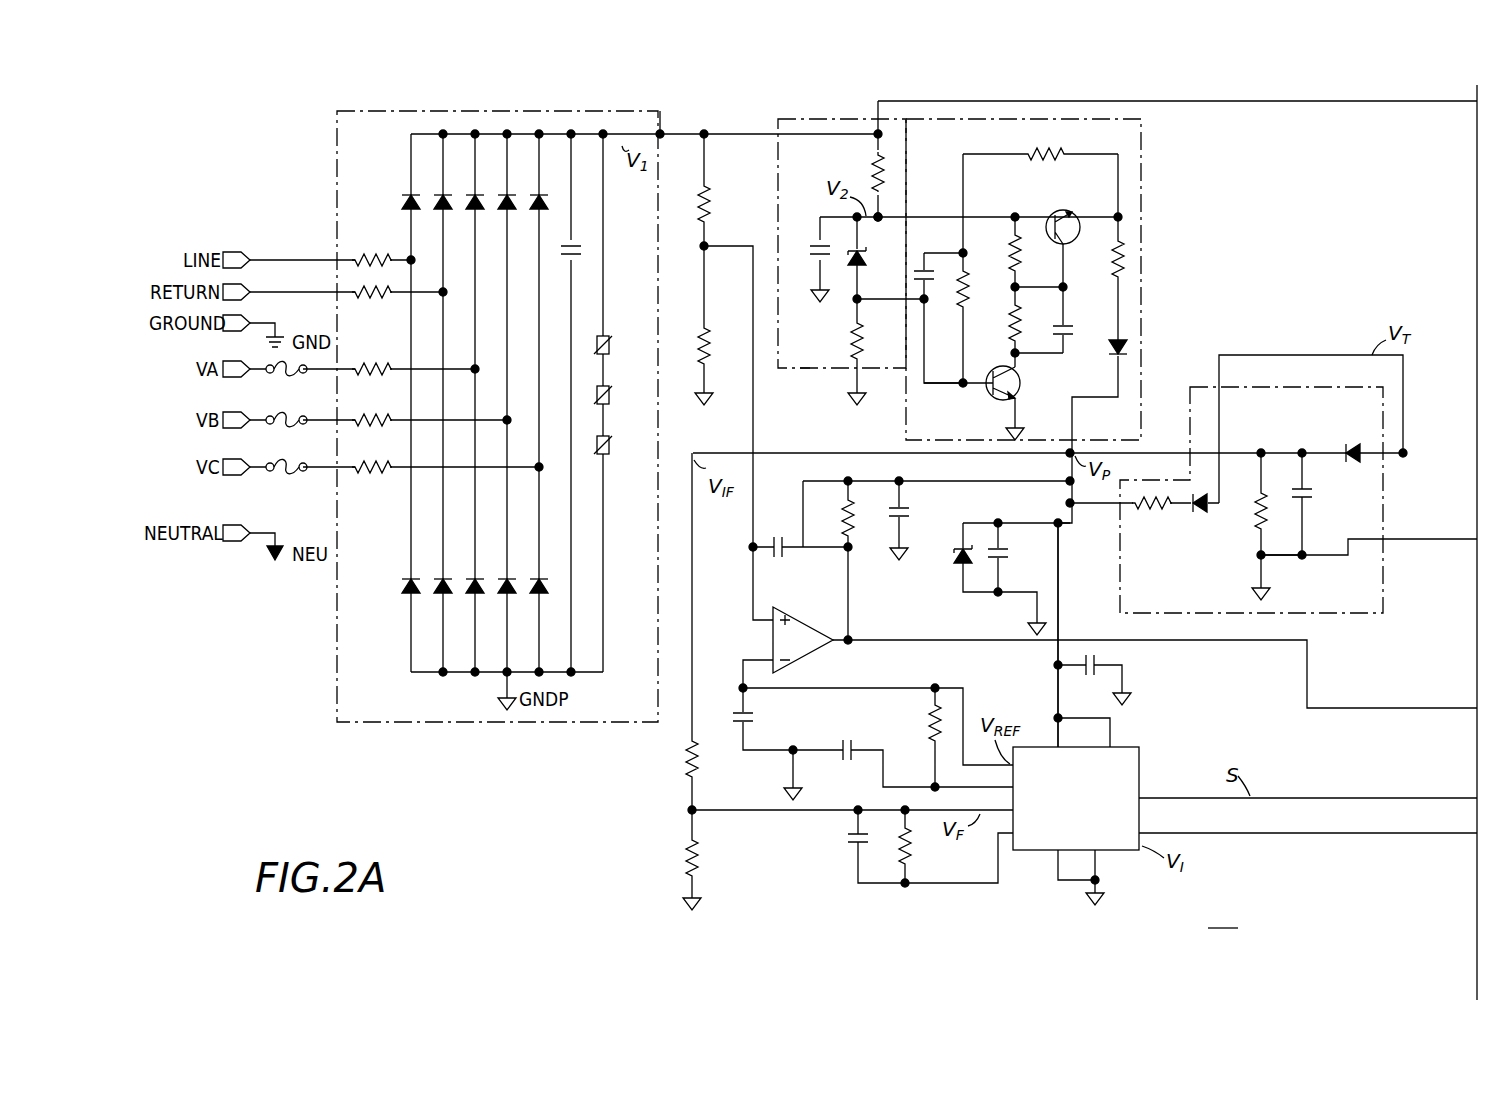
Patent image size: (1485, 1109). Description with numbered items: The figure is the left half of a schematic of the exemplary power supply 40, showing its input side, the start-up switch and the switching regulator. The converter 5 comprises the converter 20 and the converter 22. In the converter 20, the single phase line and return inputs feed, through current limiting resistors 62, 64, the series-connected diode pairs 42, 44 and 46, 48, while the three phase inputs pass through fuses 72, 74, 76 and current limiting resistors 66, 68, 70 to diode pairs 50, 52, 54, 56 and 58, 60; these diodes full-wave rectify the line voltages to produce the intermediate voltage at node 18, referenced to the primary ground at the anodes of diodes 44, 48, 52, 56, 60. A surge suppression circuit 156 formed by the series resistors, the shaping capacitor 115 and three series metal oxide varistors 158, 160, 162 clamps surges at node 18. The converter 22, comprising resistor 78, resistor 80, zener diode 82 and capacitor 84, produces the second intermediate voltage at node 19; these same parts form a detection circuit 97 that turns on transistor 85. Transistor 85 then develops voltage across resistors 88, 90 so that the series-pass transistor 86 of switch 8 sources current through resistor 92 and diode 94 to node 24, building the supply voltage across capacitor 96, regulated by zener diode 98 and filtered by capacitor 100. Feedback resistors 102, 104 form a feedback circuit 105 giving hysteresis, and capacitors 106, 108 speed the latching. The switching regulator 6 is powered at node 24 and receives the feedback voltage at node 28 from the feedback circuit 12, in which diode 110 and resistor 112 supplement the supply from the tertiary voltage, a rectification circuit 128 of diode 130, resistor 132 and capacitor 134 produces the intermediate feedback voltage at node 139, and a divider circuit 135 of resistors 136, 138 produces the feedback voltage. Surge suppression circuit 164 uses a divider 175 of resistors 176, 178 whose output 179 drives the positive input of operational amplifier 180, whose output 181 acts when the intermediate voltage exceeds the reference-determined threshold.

The converter 5 is at (754, 104).
The switching regulator 6 is at (1140, 760).
The switch 8 is at (1142, 148).
The feedback circuit 12 is at (1380, 613).
The node 18 is at (664, 138).
The node 19 is at (878, 222).
The converter 20 is at (406, 722).
The converter 22 is at (793, 120).
The node 24 is at (1064, 484).
The node 28 is at (690, 808).
The power supply 40 is at (1223, 916).
The diode 42 is at (405, 198).
The diode 44 is at (405, 582).
The diode 46 is at (440, 210).
The diode 48 is at (440, 596).
The diode 50 is at (469, 198).
The diode 52 is at (469, 582).
The diode 54 is at (504, 210).
The diode 56 is at (504, 596).
The diode 58 is at (533, 198).
The diode 60 is at (533, 582).
The current limiting resistor 62 is at (384, 252).
The current limiting resistor 64 is at (372, 298).
The current limiting resistor 66 is at (372, 375).
The current limiting resistor 68 is at (372, 426).
The current limiting resistor 70 is at (372, 473).
The fuse 72 is at (286, 376).
The fuse 74 is at (286, 427).
The fuse 76 is at (286, 474).
The resistor 78 is at (870, 168).
The resistor 80 is at (862, 340).
The zener diode 82 is at (866, 256).
The capacitor 84 is at (815, 246).
The transistor 85 is at (1021, 384).
The series-pass transistor 86 is at (1066, 210).
The resistor 88 is at (1010, 262).
The resistor 90 is at (1010, 314).
The resistor 92 is at (1113, 254).
The diode 94 is at (1112, 350).
The capacitor 96 is at (908, 512).
The detection circuit 97 is at (830, 362).
The zener diode 98 is at (956, 560).
The capacitor 100 is at (1003, 558).
The feedback resistor 102 is at (1040, 160).
The feedback resistor 104 is at (958, 292).
The feedback circuit 105 is at (947, 374).
The capacitor 106 is at (915, 268).
The capacitor 108 is at (1068, 328).
The diode 110 is at (1196, 514).
The resistor 112 is at (1168, 508).
The capacitor 115 is at (578, 246).
The rectification circuit 128 is at (1287, 546).
The diode 130 is at (1356, 448).
The resistor 132 is at (1257, 508).
The capacitor 134 is at (1312, 500).
The divider circuit 135 is at (644, 838).
The resistor 136 is at (686, 754).
The resistor 138 is at (698, 848).
The node 139 is at (1261, 450).
The surge suppression circuit 156 is at (360, 642).
The metal oxide varistor 158 is at (609, 350).
The metal oxide varistor 160 is at (609, 400).
The metal oxide varistor 162 is at (609, 450).
The surge suppression circuit 164 is at (698, 265).
The divider 175 is at (733, 230).
The resistor 176 is at (712, 196).
The resistor 178 is at (708, 342).
The output 179 is at (708, 250).
The operational amplifier 180 is at (808, 662).
The output 181 is at (836, 630).